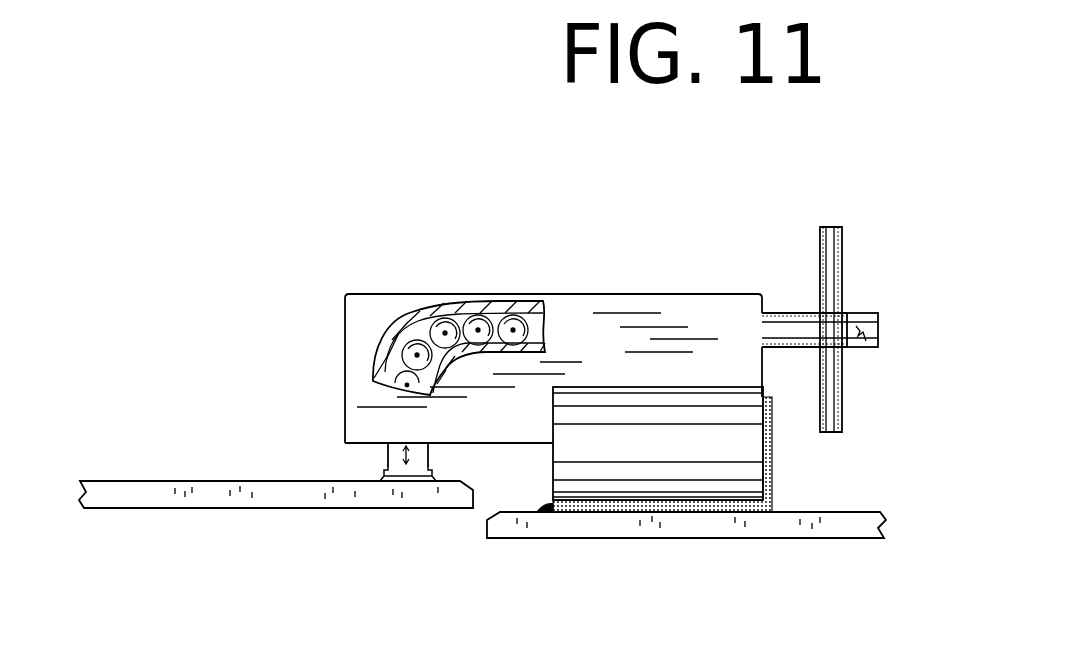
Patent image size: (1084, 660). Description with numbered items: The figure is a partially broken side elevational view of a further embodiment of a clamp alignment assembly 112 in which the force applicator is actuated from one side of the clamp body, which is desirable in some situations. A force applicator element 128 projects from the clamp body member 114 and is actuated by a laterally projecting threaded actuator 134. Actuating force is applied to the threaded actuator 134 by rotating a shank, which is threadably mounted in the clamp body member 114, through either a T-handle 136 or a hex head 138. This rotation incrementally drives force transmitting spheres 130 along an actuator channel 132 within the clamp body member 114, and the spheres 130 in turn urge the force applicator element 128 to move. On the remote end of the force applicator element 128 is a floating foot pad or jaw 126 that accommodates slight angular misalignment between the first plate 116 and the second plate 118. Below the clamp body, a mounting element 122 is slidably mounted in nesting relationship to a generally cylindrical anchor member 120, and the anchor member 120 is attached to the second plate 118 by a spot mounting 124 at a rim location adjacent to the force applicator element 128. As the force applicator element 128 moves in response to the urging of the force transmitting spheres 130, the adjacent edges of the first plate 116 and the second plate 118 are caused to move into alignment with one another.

The clamp alignment assembly 112 is at (593, 283).
The clamp body member 114 is at (458, 293).
The first plate 116 is at (298, 490).
The second plate 118 is at (768, 525).
The generally cylindrical member 120 is at (697, 505).
The mounting element 122 is at (675, 448).
The spot mounting 124 is at (545, 505).
The floating foot pad or jaw 126 is at (415, 477).
The force applicator element 128 is at (395, 457).
The force transmitting spheres 130 is at (400, 352).
The actuator channel 132 is at (401, 316).
The laterally projecting threaded actuator 134 is at (812, 313).
The T-handle 136 is at (820, 248).
The hex head 138 is at (892, 398).